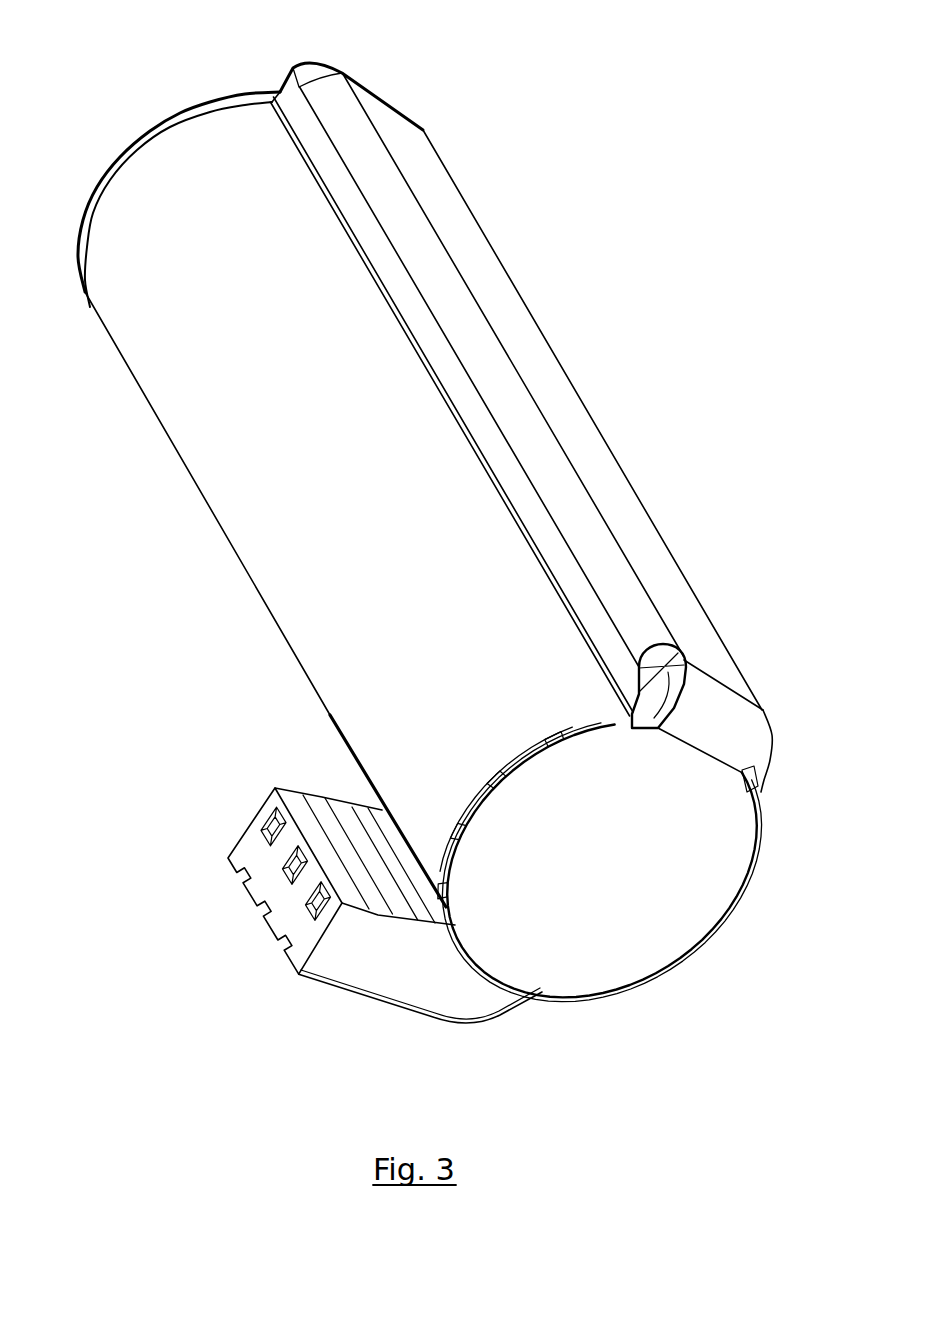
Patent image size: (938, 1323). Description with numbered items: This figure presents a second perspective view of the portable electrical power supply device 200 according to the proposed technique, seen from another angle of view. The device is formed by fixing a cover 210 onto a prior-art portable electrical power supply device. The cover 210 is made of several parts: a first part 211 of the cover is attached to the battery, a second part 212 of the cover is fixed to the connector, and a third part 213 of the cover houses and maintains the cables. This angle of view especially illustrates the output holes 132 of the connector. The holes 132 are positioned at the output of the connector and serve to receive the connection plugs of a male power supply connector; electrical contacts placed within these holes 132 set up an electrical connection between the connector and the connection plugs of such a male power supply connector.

The portable electrical power supply device 200 is at (426, 552).
The first part of the cover 211 is at (292, 575).
The third part of the cover 213 is at (485, 287).
The cover 210 is at (770, 680).
The output holes 132 is at (272, 830).
The second part of the cover 212 is at (365, 953).